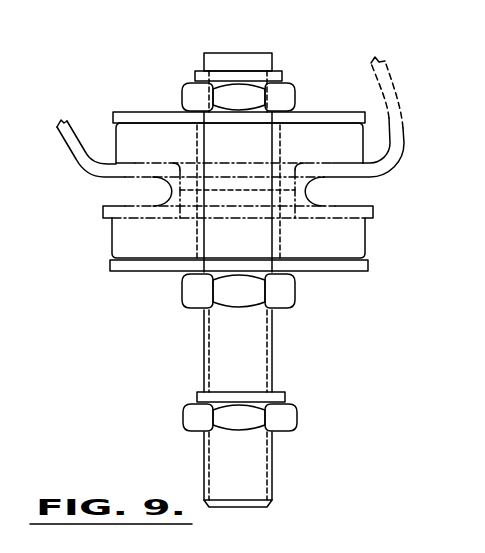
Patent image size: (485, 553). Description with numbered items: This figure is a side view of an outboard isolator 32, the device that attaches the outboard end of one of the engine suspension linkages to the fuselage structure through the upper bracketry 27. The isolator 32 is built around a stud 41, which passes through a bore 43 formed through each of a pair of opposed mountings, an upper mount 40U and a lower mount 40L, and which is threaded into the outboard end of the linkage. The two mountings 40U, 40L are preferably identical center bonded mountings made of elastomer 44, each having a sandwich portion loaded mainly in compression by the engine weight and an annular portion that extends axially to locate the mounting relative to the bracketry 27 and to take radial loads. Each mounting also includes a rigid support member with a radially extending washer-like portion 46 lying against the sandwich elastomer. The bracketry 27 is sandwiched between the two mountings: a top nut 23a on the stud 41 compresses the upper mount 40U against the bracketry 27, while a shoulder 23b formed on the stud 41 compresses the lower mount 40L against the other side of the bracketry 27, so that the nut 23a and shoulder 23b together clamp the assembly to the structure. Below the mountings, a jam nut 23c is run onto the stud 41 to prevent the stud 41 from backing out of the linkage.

The top nut 23a is at (281, 95).
The shoulder 23b is at (200, 290).
The jam nut 23c is at (193, 417).
The upper bracketry 27 is at (400, 128).
The outboard isolator 32 is at (402, 178).
The upper mount 40U is at (110, 140).
The lower mount 40L is at (111, 242).
The stud 41 is at (275, 343).
The bore 43 is at (206, 148).
The elastomer 44 is at (348, 140).
The washer-like portion 46 is at (302, 117).